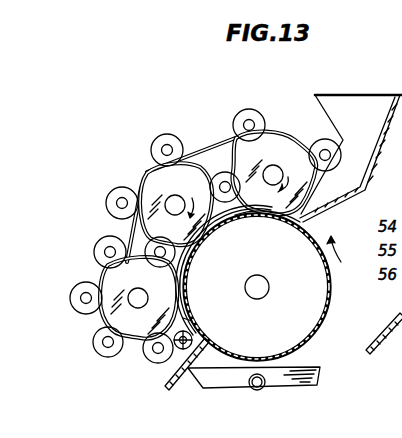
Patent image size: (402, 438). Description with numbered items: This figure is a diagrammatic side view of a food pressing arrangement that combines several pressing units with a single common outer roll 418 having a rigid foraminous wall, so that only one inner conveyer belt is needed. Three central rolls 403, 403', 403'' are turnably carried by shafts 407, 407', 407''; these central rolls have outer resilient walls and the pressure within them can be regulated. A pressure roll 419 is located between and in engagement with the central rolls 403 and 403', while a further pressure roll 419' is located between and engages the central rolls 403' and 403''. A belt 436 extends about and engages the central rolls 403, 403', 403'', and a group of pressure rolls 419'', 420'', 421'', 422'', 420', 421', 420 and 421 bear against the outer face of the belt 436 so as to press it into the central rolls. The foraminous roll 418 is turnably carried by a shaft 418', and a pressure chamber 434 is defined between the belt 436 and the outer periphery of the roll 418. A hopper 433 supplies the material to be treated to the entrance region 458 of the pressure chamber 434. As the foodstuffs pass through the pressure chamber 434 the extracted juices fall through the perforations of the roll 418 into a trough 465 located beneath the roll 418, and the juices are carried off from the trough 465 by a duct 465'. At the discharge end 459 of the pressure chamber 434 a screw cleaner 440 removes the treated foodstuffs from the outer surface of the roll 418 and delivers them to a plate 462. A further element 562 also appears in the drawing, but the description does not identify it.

The central roll 403 is at (274, 160).
The central roll 403' is at (166, 202).
The central roll 403'' is at (118, 298).
The shaft 407 is at (273, 168).
The shaft 407' is at (181, 197).
The shaft 407'' is at (141, 289).
The roll 418 is at (275, 287).
The shaft 418' is at (278, 286).
The pressure roll 419 is at (222, 177).
The pressure roll 419' is at (189, 255).
The pressure roll 419'' is at (140, 357).
The pressure roll 420 is at (249, 115).
The pressure roll 420' is at (111, 197).
The pressure roll 420'' is at (85, 349).
The pressure roll 421 is at (319, 143).
The pressure roll 421' is at (173, 138).
The pressure roll 421'' is at (80, 290).
The pressure roll 422'' is at (93, 252).
The hopper 433 is at (378, 96).
The pressure chamber 434 is at (261, 213).
The belt 436 is at (128, 224).
The screw cleaner 440 is at (193, 338).
The entrance region 458 is at (265, 214).
The discharge end 459 is at (196, 317).
The plate 462 is at (171, 388).
The trough 465 is at (261, 391).
The duct 465' is at (246, 394).
The guide plate 562 is at (374, 353).